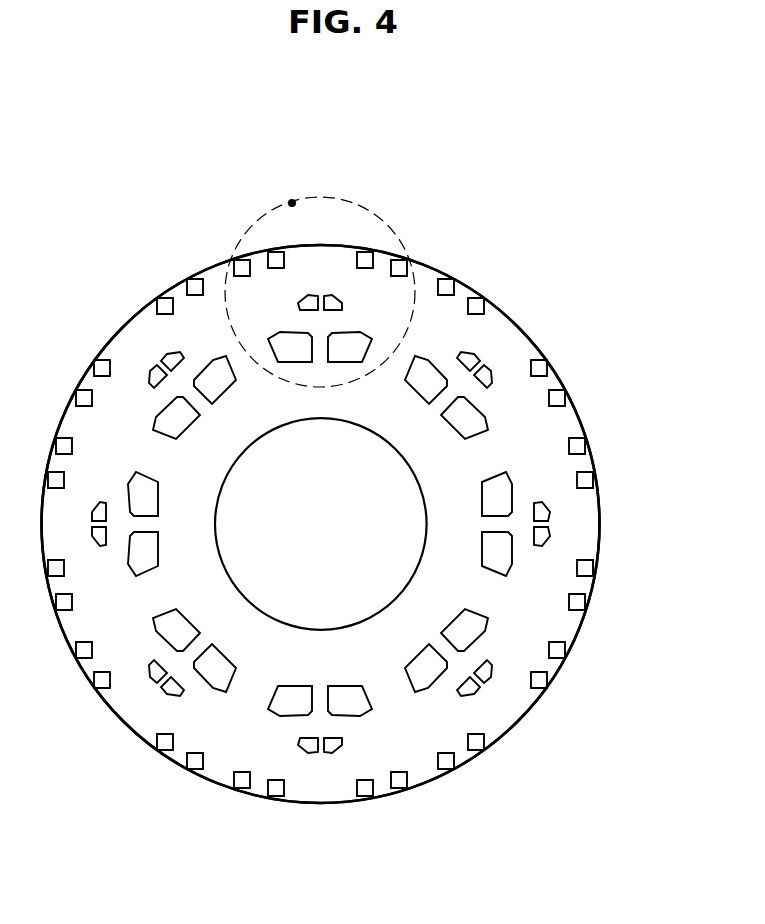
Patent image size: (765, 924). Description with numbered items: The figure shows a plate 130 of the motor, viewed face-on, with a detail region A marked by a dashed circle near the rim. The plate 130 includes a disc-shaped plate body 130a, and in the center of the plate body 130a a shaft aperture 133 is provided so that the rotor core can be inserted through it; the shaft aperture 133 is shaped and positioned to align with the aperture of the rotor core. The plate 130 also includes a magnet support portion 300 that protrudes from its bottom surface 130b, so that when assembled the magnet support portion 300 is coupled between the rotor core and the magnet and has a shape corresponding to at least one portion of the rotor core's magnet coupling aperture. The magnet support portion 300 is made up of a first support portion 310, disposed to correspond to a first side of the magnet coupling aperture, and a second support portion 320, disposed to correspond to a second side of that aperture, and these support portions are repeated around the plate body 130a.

The plate 130 is at (571, 176).
The plate body 130a is at (537, 343).
The bottom surface 130b is at (543, 427).
The shaft aperture 133 is at (243, 453).
The magnet support portion 300 is at (408, 150).
The first support portion 310 is at (477, 300).
The second support portion 320 is at (290, 337).
The enlarged region A is at (292, 203).